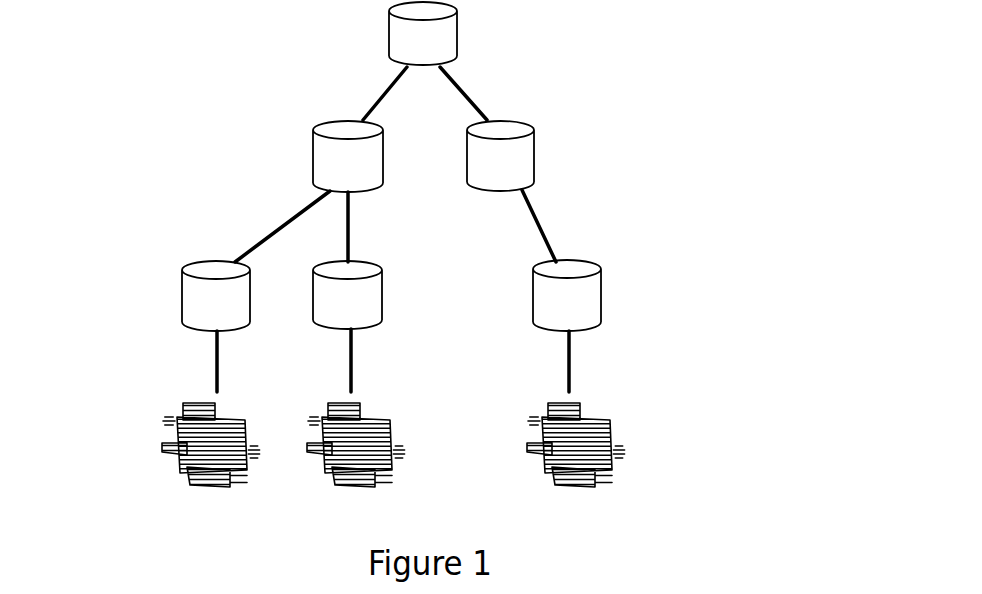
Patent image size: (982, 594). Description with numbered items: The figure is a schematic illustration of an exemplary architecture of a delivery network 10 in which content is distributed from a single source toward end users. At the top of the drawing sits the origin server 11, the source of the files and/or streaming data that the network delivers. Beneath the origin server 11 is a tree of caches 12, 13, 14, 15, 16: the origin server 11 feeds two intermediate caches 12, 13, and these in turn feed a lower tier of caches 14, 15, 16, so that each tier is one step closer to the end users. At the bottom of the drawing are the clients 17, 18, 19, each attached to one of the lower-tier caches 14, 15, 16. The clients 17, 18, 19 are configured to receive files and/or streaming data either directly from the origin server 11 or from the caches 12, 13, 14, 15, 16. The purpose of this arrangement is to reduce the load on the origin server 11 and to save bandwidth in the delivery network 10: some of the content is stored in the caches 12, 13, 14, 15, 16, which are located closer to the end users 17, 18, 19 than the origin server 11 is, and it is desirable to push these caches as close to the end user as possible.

The network 10 is at (110, 121).
The origin server 11 is at (457, 45).
The cache 12 is at (313, 155).
The cache 13 is at (534, 154).
The cache 14 is at (182, 297).
The cache 15 is at (382, 297).
The cache 16 is at (601, 296).
The client 17 is at (140, 438).
The client 18 is at (410, 438).
The client 19 is at (647, 437).